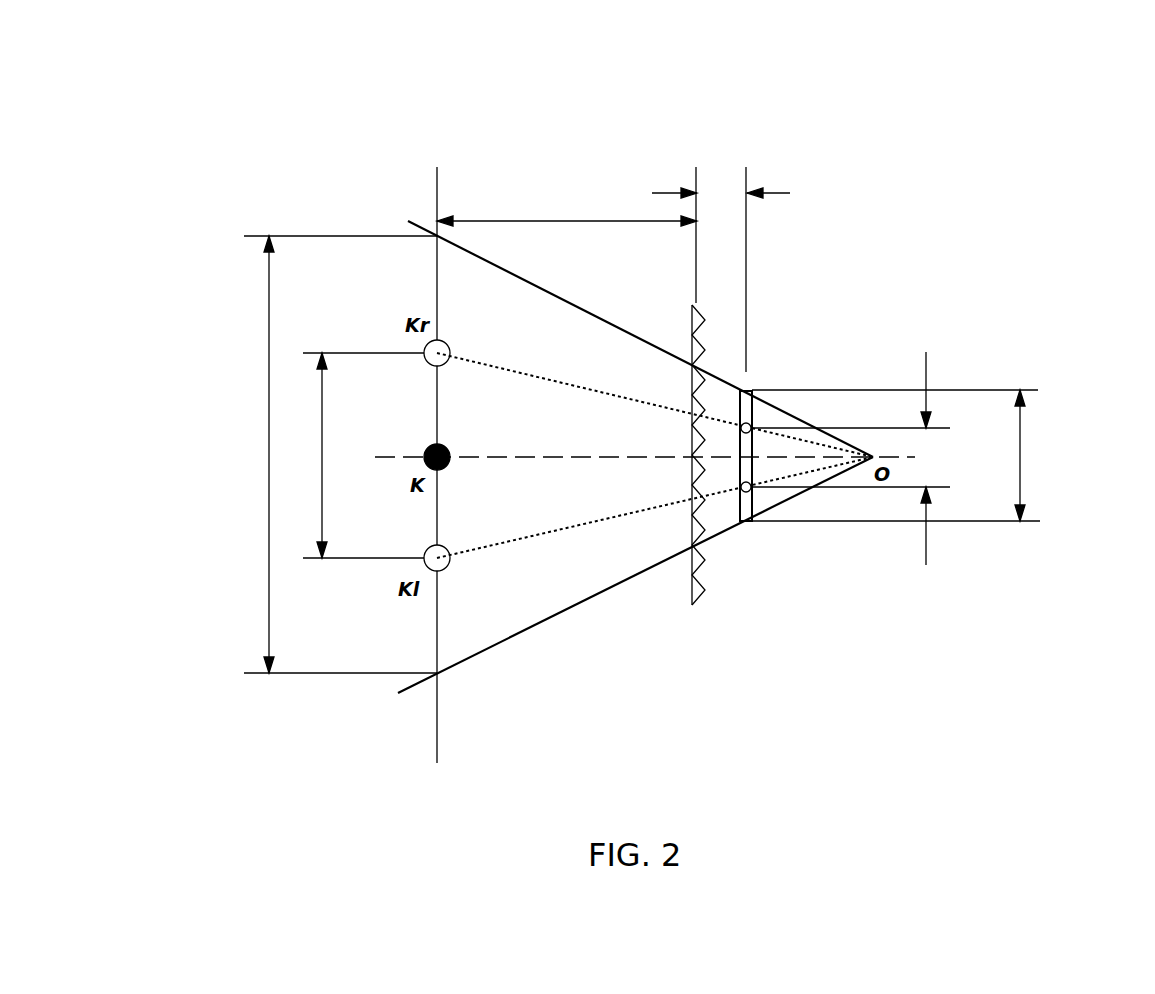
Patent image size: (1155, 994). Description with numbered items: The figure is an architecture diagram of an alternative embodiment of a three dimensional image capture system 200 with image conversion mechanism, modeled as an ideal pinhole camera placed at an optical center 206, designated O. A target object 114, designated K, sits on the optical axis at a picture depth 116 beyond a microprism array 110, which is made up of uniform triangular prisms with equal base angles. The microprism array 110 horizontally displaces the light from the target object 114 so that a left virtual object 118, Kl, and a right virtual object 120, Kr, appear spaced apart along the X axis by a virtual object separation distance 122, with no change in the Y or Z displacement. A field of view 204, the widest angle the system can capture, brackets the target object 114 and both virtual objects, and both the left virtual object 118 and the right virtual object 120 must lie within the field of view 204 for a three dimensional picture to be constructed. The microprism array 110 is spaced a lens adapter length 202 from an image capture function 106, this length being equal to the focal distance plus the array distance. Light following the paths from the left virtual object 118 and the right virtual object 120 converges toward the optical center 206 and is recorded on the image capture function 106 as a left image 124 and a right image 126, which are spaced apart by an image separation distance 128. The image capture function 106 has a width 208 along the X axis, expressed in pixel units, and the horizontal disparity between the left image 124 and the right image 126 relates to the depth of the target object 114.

The three dimensional image capture system 200 is at (250, 72).
The lens adapter length 202 is at (763, 187).
The field of view 204 is at (269, 342).
The optical center 206 is at (872, 450).
The width 208 is at (1022, 430).
The image capture function 106 is at (746, 522).
The microprism array 110 is at (700, 590).
The target object 114 is at (437, 455).
The picture depth 116 is at (636, 218).
The left virtual object 118 is at (440, 562).
The right virtual object 120 is at (437, 352).
The virtual object separation distance 122 is at (323, 460).
The left image 124 is at (742, 493).
The right image 126 is at (744, 424).
The image separation distance 128 is at (926, 535).